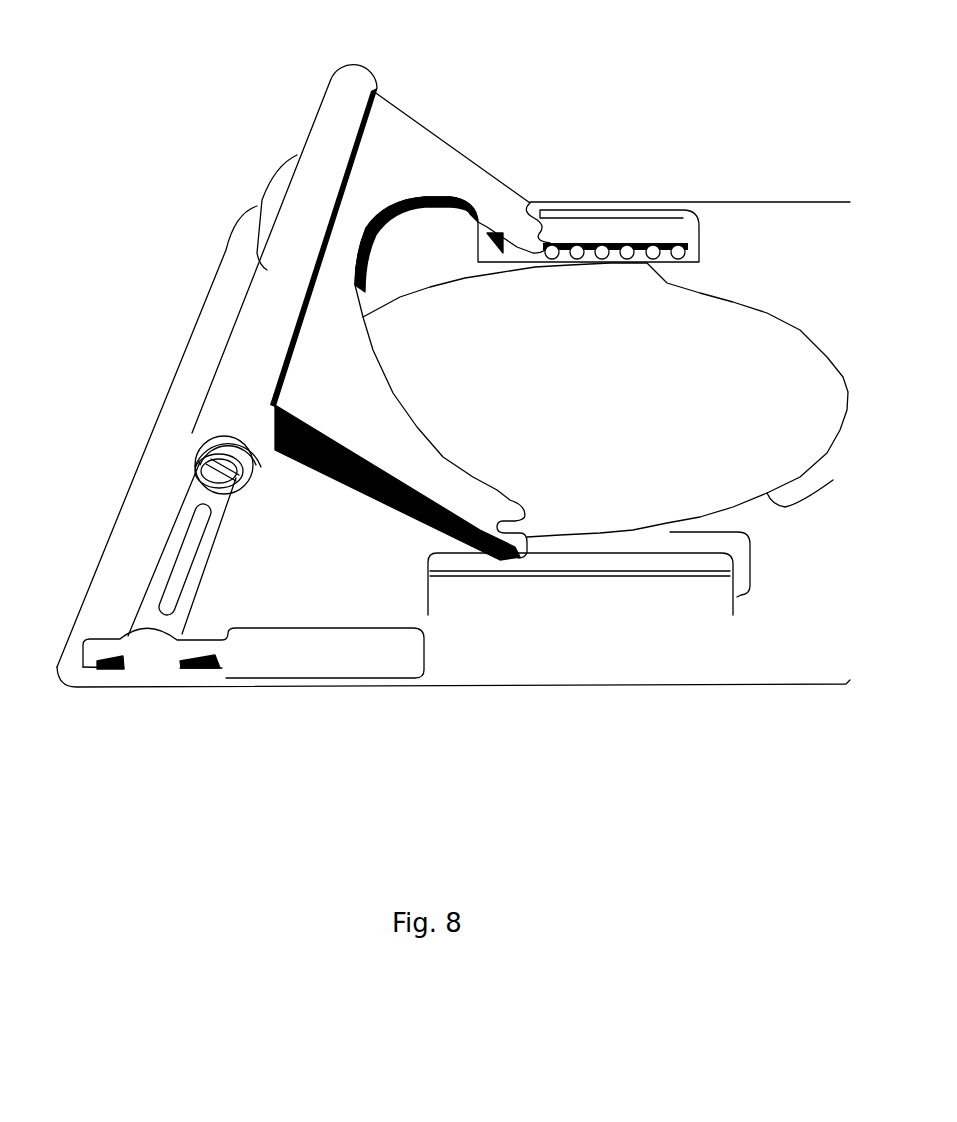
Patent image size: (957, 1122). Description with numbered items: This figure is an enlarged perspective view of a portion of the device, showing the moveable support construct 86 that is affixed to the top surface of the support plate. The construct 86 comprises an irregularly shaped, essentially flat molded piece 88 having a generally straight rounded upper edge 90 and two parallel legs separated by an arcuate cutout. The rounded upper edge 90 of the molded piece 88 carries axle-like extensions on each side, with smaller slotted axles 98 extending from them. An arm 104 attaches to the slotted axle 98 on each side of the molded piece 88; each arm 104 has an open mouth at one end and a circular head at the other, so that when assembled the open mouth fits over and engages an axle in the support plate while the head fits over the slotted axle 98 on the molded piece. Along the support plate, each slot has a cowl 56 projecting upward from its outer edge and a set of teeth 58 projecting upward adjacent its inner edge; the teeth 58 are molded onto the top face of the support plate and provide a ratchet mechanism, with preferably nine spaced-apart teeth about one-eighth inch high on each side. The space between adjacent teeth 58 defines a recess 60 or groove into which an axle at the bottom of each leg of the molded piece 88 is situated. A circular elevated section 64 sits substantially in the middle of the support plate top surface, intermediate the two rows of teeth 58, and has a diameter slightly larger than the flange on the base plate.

The cowl 56 is at (630, 222).
The teeth 58 is at (597, 236).
The recess 60 is at (647, 262).
The circular elevated section 64 is at (819, 486).
The moveable support construct 86 is at (255, 298).
The molded piece 88 is at (397, 520).
The rounded upper edge 90 is at (312, 127).
The slotted axle 98 is at (192, 436).
The arm 104 is at (198, 470).